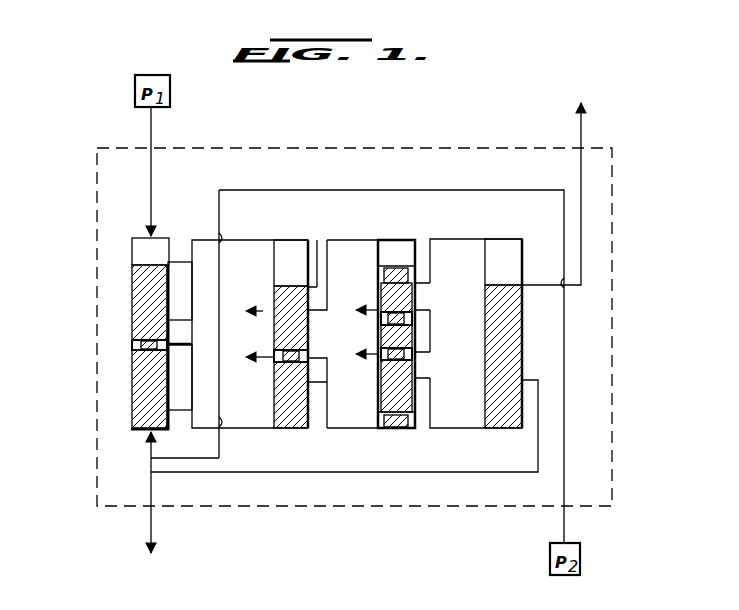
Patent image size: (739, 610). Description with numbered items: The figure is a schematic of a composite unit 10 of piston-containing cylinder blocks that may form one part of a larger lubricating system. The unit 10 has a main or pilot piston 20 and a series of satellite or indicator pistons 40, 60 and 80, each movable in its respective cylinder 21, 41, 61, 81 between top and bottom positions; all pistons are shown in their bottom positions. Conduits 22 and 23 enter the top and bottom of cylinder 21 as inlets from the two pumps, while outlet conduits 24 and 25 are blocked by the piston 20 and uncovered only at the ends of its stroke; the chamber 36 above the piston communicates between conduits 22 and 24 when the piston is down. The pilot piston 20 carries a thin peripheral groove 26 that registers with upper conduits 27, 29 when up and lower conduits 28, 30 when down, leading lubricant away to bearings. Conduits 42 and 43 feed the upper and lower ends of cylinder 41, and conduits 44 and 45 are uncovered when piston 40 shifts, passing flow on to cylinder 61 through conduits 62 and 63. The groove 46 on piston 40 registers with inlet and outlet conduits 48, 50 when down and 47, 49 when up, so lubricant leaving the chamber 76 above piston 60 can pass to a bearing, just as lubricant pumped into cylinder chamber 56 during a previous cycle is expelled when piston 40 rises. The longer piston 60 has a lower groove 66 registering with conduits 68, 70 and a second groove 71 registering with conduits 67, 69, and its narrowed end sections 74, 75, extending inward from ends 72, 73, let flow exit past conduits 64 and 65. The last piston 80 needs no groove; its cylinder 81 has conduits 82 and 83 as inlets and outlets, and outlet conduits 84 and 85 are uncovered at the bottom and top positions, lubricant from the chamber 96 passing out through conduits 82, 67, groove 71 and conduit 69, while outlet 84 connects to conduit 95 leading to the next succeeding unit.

The composite unit 10 is at (399, 148).
The pilot piston 20 is at (109, 334).
The cylinder 21 is at (131, 390).
The inlet conduit 22 is at (153, 186).
The inlet conduit 23 is at (161, 458).
The outlet conduit 24 is at (178, 260).
The outlet conduit 25 is at (170, 412).
The peripheral groove 26 is at (171, 345).
The upper conduit 27 is at (190, 318).
The lower conduit 28 is at (180, 377).
The upper conduit 29 is at (133, 322).
The lower conduit 30 is at (133, 345).
The chamber 36 is at (158, 262).
The satellite piston 40 is at (287, 334).
The cylinder 41 is at (277, 400).
The conduit 42 is at (244, 240).
The conduit 43 is at (256, 430).
The conduit 44 is at (317, 240).
The conduit 45 is at (318, 430).
The peripheral groove 46 is at (310, 357).
The inlet conduit 47 is at (352, 312).
The inlet conduit 48 is at (310, 364).
The outlet conduit 49 is at (263, 311).
The outlet conduit 50 is at (270, 357).
The cylinder chamber 56 is at (299, 274).
The satellite piston 60 is at (387, 297).
The cylinder 61 is at (356, 412).
The conduit 62 is at (344, 240).
The conduit 63 is at (350, 430).
The conduit 64 is at (421, 297).
The conduit 65 is at (432, 378).
The lower groove 66 is at (421, 358).
The upper conduit 67 is at (432, 310).
The lower conduit 68 is at (424, 356).
The upper conduit 69 is at (371, 312).
The lower conduit 70 is at (362, 377).
The second groove 71 is at (370, 342).
The upper end 72 is at (410, 275).
The lower end 73 is at (396, 430).
The upper narrowed diameter end section 74 is at (403, 354).
The lower narrowed diameter end section 75 is at (408, 430).
The chamber 76 is at (404, 263).
The satellite piston 80 is at (487, 333).
The cylinder 81 is at (491, 408).
The conduit 82 is at (464, 240).
The conduit 83 is at (462, 430).
The outlet conduit 84 is at (546, 321).
The outlet conduit 85 is at (538, 381).
The conduit 95 is at (583, 237).
The chamber 96 is at (511, 272).